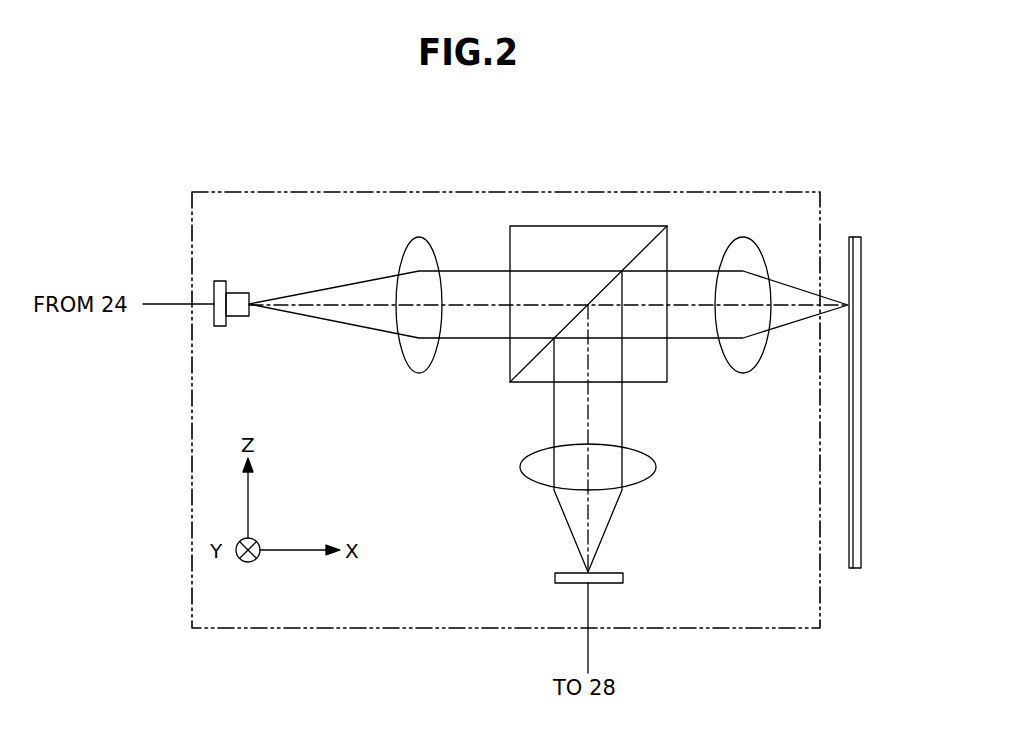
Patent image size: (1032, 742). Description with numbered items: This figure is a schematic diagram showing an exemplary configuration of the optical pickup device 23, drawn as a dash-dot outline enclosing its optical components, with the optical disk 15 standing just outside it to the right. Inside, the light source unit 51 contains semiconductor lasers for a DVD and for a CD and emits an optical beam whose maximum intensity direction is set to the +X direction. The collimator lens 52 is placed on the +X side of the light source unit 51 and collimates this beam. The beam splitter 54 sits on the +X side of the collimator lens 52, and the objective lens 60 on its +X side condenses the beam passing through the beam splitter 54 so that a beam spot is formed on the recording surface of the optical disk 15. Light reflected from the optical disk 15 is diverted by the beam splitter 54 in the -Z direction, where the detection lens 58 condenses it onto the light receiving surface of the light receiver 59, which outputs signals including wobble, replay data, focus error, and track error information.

The optical disk 15 is at (862, 382).
The optical pickup device 23 is at (645, 192).
The light source unit 51 is at (240, 293).
The collimator lens 52 is at (436, 252).
The beam splitter 54 is at (510, 368).
The detection lens 58 is at (657, 467).
The light receiver 59 is at (623, 578).
The objective lens 60 is at (760, 252).